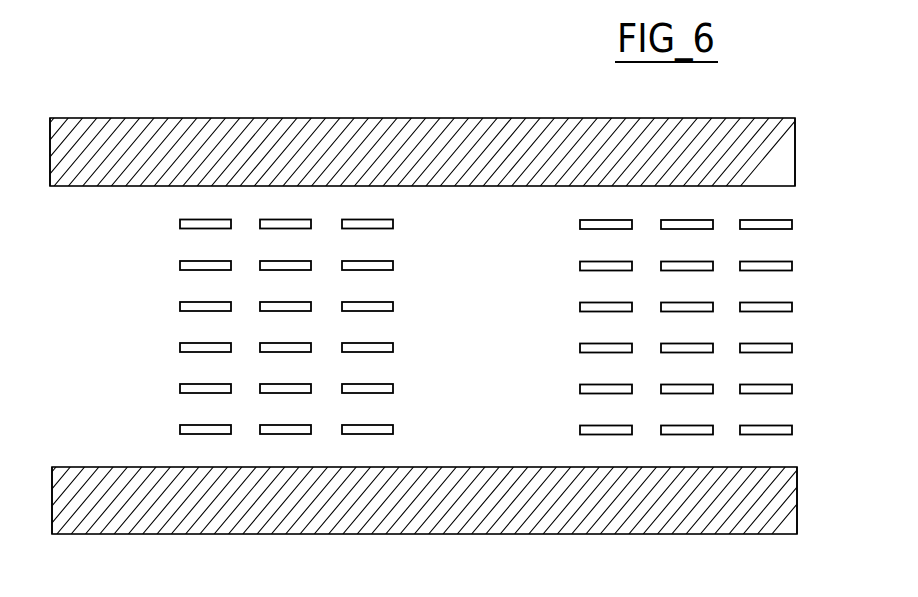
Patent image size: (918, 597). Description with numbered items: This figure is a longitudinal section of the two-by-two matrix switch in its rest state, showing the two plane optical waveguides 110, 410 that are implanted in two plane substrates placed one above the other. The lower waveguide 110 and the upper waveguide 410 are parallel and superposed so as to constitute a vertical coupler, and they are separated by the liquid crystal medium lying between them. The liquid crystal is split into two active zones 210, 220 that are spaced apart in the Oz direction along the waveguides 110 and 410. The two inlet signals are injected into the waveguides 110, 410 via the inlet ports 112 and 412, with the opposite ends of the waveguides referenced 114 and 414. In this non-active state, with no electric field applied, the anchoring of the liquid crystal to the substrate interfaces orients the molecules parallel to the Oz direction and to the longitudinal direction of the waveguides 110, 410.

The plane optical waveguide 410 is at (400, 148).
The inlet port 412 is at (50, 141).
The upper substrate right end 414 is at (795, 137).
The plane optical waveguide 110 is at (440, 513).
The inlet port 112 is at (52, 503).
The lower substrate right end 114 is at (797, 510).
The active zone 210 is at (168, 344).
The active zone 220 is at (570, 350).